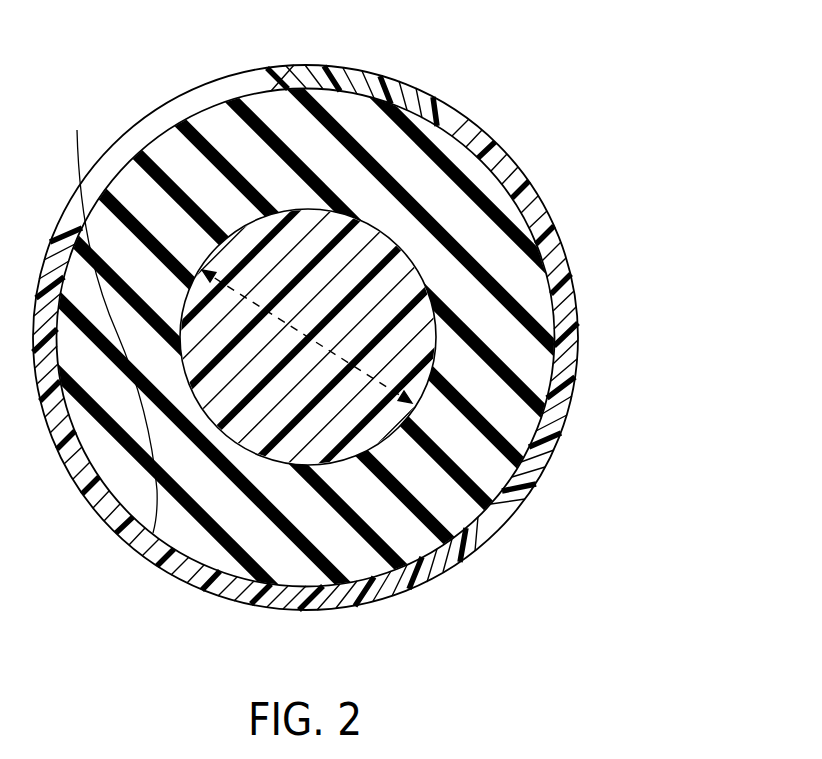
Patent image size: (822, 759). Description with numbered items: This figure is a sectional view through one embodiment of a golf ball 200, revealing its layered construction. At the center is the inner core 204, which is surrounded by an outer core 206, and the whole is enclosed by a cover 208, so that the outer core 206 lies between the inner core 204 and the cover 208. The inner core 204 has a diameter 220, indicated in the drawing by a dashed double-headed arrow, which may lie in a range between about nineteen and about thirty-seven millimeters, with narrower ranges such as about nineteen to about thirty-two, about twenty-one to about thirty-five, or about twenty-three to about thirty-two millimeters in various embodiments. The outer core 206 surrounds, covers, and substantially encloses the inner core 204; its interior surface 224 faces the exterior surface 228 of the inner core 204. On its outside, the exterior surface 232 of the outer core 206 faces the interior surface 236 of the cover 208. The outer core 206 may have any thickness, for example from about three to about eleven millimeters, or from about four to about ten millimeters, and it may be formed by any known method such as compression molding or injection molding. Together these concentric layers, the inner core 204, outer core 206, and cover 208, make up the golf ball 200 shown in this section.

The golf ball 200 is at (463, 595).
The inner core 204 is at (375, 250).
The outer core 206 is at (478, 233).
The cover 208 is at (568, 341).
The diameter 220 is at (255, 300).
The interior surface 224 is at (448, 360).
The exterior surface 228 is at (265, 462).
The exterior surface 232 is at (107, 315).
The interior surface 236 is at (196, 562).